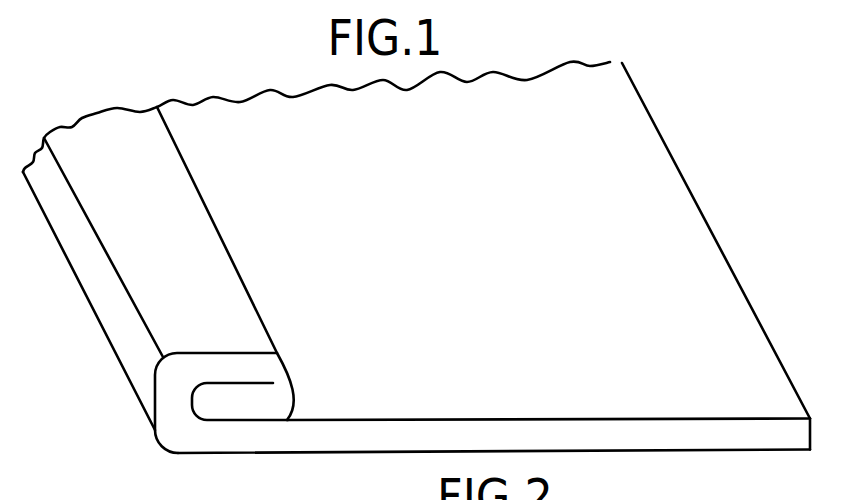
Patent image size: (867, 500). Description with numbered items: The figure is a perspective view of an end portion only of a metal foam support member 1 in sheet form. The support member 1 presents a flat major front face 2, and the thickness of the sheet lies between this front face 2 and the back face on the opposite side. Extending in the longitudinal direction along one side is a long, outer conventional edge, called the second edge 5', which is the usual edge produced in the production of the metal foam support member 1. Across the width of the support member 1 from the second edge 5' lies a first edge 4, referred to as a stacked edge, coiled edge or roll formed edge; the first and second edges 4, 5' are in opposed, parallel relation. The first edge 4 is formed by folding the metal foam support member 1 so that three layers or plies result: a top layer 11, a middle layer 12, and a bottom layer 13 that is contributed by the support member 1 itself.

The metal foam support member 1 is at (728, 190).
The major front face 2 is at (452, 248).
The first edge 4 is at (123, 332).
The second edge 5' is at (811, 385).
The top layer 11 is at (202, 365).
The middle layer 12 is at (273, 407).
The bottom layer 13 is at (248, 442).